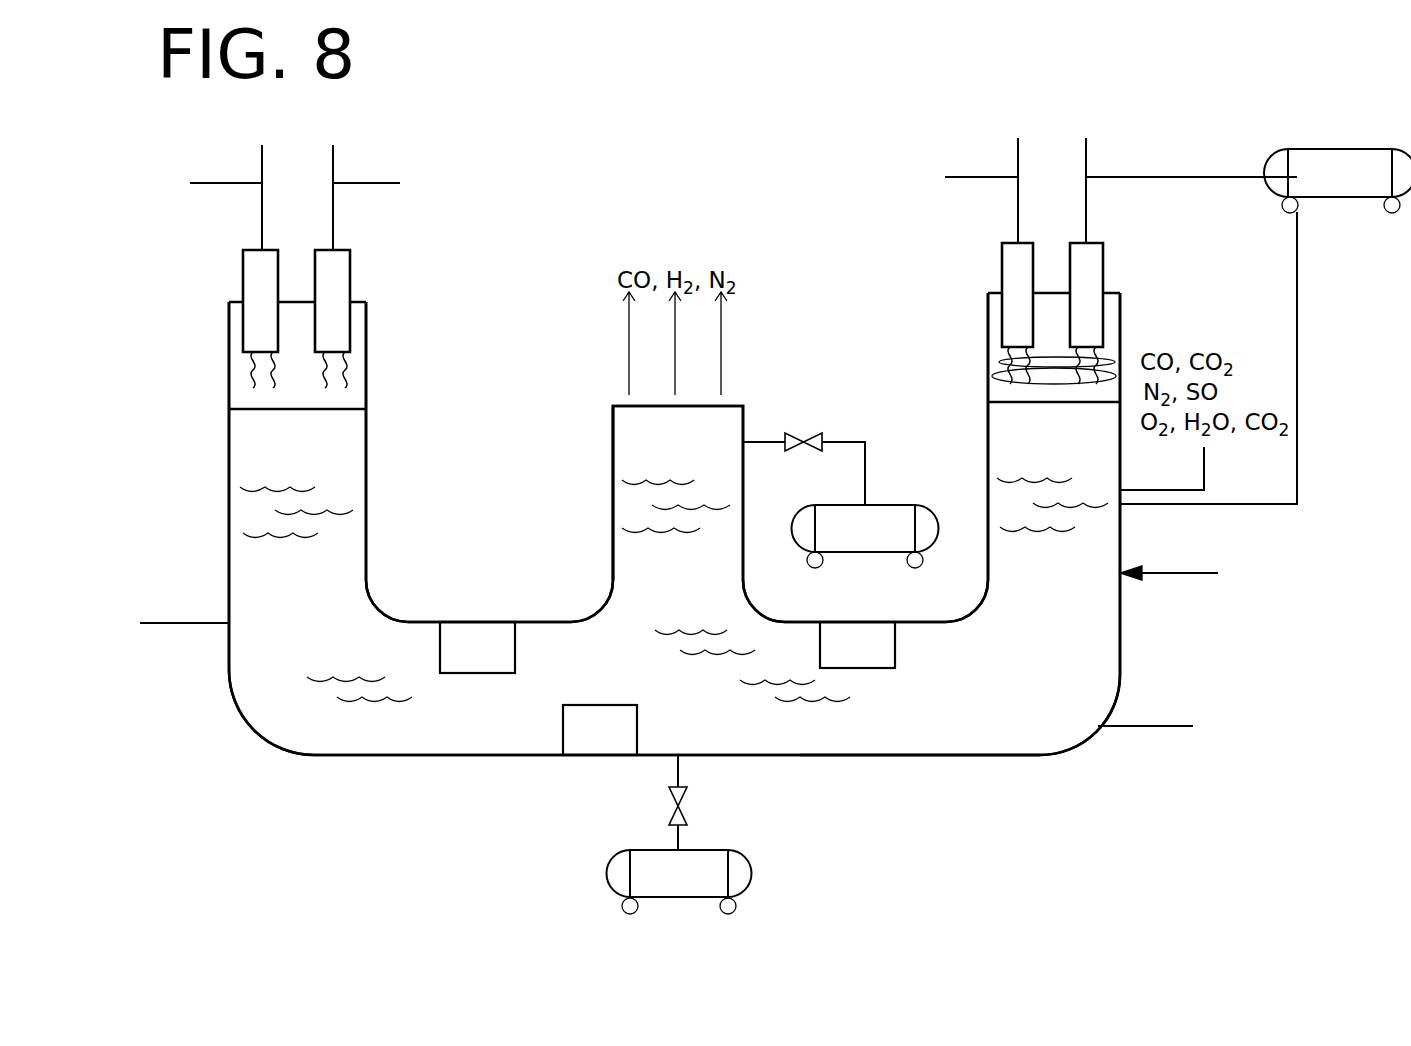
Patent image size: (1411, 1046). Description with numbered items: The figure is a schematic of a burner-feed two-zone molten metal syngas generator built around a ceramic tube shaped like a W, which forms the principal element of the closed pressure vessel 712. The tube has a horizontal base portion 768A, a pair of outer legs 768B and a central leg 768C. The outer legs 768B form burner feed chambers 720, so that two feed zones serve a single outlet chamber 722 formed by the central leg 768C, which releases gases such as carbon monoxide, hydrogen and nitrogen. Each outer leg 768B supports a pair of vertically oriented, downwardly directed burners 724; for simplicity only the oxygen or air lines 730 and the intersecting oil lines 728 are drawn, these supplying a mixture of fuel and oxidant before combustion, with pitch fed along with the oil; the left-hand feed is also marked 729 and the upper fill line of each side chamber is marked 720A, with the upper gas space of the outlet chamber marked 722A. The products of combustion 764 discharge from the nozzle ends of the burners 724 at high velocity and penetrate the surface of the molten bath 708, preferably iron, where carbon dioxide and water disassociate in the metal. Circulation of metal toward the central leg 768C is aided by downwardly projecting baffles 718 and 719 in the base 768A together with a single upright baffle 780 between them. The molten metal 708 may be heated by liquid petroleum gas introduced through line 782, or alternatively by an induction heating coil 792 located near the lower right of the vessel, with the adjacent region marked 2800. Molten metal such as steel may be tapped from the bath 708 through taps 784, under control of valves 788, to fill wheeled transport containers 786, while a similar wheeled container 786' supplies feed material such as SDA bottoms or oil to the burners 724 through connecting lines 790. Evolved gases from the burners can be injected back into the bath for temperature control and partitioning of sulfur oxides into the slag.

The molten bath 708 is at (318, 622).
The closed pressure vessel 712 is at (1245, 657).
The downwardly projecting baffles 718 is at (857, 645).
The outlet port 719 is at (477, 647).
The burner feed chambers 720 is at (348, 542).
The bath surface in side chamber 720A is at (674, 429).
The outlet chamber 722 is at (718, 489).
The gas space of central chamber 722A is at (675, 371).
The burners 724 is at (333, 277).
The oil lines 728 is at (1040, 170).
The oil and pitch feed 729 is at (338, 138).
The oxygen or air lines 730 is at (1086, 158).
The products of combustion 764 is at (253, 376).
The horizontal base portion 768A is at (674, 737).
The outer legs 768B is at (250, 568).
The central leg 768C is at (568, 493).
The vertically upright baffle 780 is at (600, 730).
The LPG line 782 is at (1193, 567).
The taps 784 is at (628, 773).
The wheeled transport containers 786 is at (773, 709).
The wheeled containers 786' is at (1337, 181).
The valves 788 is at (747, 617).
The connecting line 790 is at (197, 622).
The induction heating coil 792 is at (1217, 732).
The vessel bottom 2800 is at (920, 732).